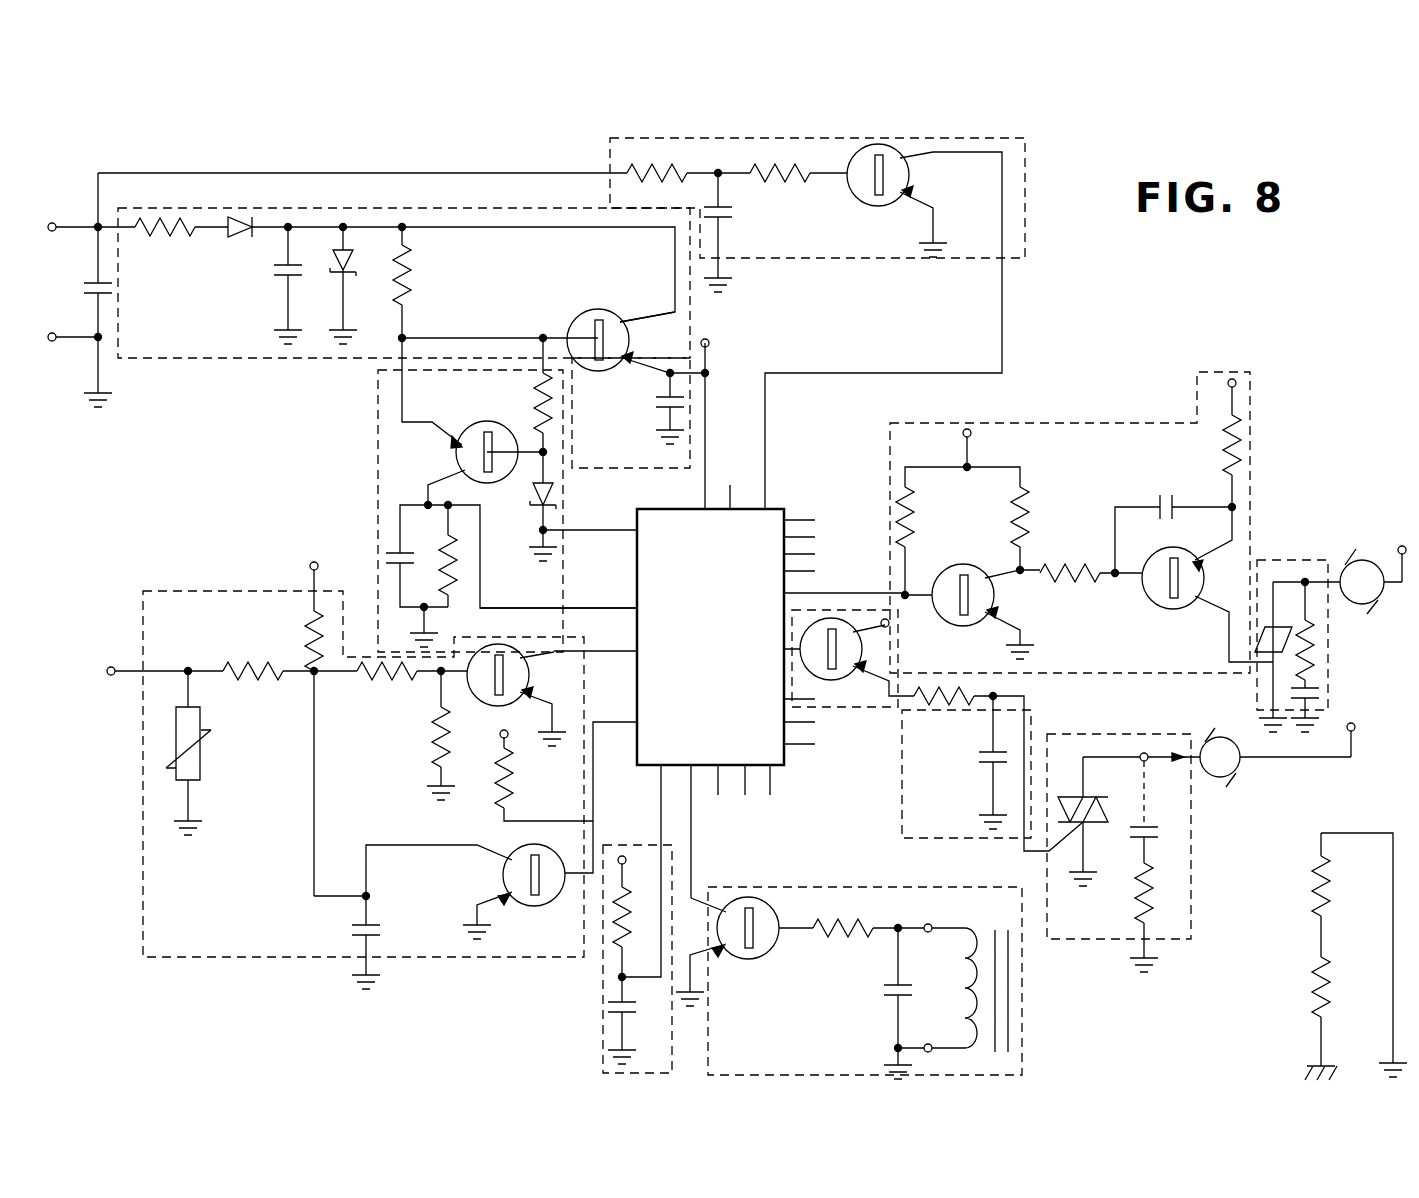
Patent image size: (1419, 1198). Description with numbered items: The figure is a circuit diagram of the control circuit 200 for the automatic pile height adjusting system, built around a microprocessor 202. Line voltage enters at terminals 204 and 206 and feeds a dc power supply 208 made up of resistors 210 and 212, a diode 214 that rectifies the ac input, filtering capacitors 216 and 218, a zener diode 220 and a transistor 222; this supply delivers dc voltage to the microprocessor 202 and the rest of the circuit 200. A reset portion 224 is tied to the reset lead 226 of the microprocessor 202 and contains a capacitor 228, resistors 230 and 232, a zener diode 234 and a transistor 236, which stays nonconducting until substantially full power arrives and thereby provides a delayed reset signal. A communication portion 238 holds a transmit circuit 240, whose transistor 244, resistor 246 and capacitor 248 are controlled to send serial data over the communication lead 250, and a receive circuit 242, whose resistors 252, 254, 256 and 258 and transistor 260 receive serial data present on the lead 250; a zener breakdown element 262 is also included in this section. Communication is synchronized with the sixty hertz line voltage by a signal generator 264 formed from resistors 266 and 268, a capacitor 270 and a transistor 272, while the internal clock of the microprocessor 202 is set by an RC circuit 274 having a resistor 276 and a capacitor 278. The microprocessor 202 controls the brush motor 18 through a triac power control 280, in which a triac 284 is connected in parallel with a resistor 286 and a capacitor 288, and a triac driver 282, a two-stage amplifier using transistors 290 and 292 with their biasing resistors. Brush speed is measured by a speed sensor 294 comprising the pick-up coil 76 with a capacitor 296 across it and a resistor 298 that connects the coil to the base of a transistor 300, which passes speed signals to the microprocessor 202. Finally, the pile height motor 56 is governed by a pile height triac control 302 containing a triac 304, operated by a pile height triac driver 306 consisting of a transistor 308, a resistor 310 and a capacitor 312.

The motor 18 is at (1368, 560).
The pile height motor 56 is at (1214, 740).
The pick-up coil 76 is at (958, 930).
The control circuit 200 is at (1113, 315).
The microprocessor 202 is at (784, 513).
The terminal 204 is at (79, 223).
The terminal 206 is at (80, 336).
The dc power supply 208 is at (218, 360).
The resistor 210 is at (151, 240).
The resistor 212 is at (412, 284).
The diode 214 is at (222, 240).
The filtering capacitor 216 is at (278, 290).
The filtering capacitor 218 is at (656, 401).
The zener diode 220 is at (352, 270).
The transistor 222 is at (572, 318).
The reset portion 224 is at (378, 495).
The reset lead 226 is at (605, 608).
The capacitor 228 is at (431, 556).
The resistor 230 is at (440, 546).
The resistor 232 is at (538, 400).
The zener diode 234 is at (539, 520).
The transistor 236 is at (480, 484).
The communication portion 238 is at (260, 957).
The transmit circuit 240 is at (452, 847).
The receive circuit 242 is at (430, 690).
The transistor 244 is at (516, 851).
The resistor 246 is at (511, 795).
The capacitor 248 is at (380, 933).
The communication lead 250 is at (125, 654).
The resistor 252 is at (255, 665).
The resistor 254 is at (310, 614).
The resistor 256 is at (362, 686).
The resistor 258 is at (439, 735).
The transistor 260 is at (530, 656).
The zener breakdown element 262 is at (202, 775).
The 60 Hz signal generator 264 is at (1026, 248).
The resistor 266 is at (688, 183).
The resistor 268 is at (798, 191).
The capacitor 270 is at (723, 214).
The transistor 272 is at (866, 208).
The RC circuit 274 is at (605, 1022).
The resistor 276 is at (600, 926).
The capacitor 278 is at (629, 1011).
The triac power control 280 is at (1293, 560).
The triac driver 282 is at (1147, 425).
The triac 284 is at (1268, 630).
The resistor 286 is at (1310, 650).
The capacitor 288 is at (1319, 698).
The transistor 290 is at (985, 540).
The transistor 292 is at (1150, 600).
The speed sensor 294 is at (860, 887).
The capacitor 296 is at (888, 991).
The resistor 298 is at (868, 916).
The transistor 300 is at (775, 950).
The pile height triac control 302 is at (1112, 734).
The triac 304 is at (1089, 822).
The pile height triac driver 306 is at (902, 808).
The transistor 308 is at (840, 669).
The resistor 310 is at (998, 769).
The capacitor 312 is at (988, 762).